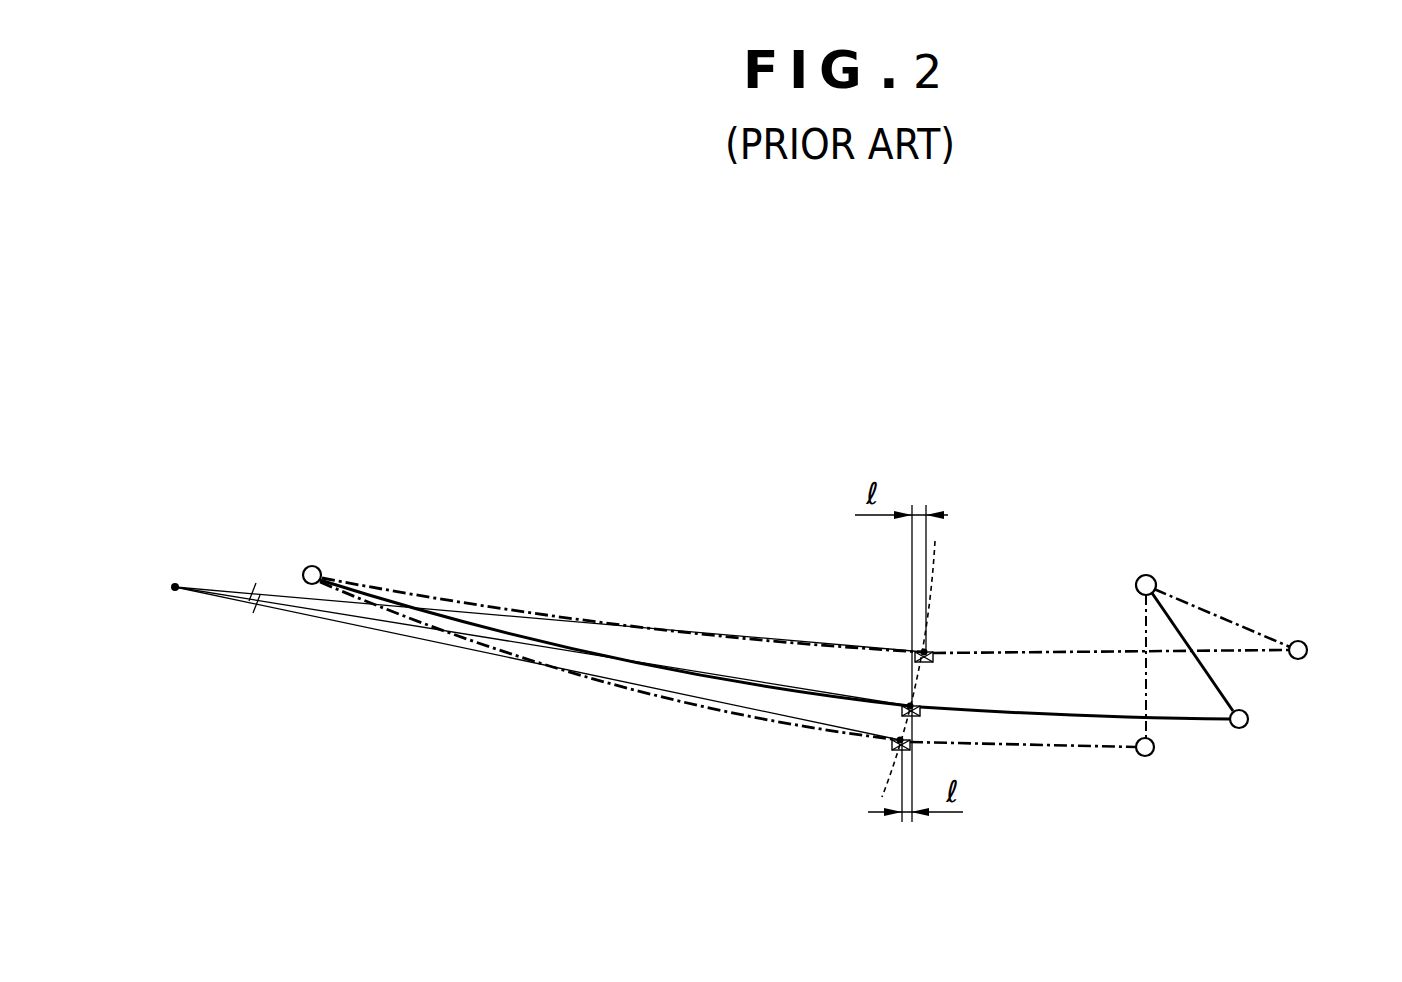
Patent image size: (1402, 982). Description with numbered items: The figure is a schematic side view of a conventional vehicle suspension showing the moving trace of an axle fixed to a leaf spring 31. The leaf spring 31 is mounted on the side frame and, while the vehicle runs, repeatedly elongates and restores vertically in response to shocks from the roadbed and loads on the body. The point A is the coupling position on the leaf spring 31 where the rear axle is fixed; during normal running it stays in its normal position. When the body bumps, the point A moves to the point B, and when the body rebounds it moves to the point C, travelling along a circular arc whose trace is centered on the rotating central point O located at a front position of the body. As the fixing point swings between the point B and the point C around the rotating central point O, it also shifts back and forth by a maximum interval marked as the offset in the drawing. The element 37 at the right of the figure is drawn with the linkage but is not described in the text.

The leaf spring 31 is at (1073, 717).
The connecting link 37 is at (1223, 695).
The point A is at (899, 710).
The point B is at (928, 648).
The point C is at (895, 746).
The rotating central point (0) O is at (173, 570).